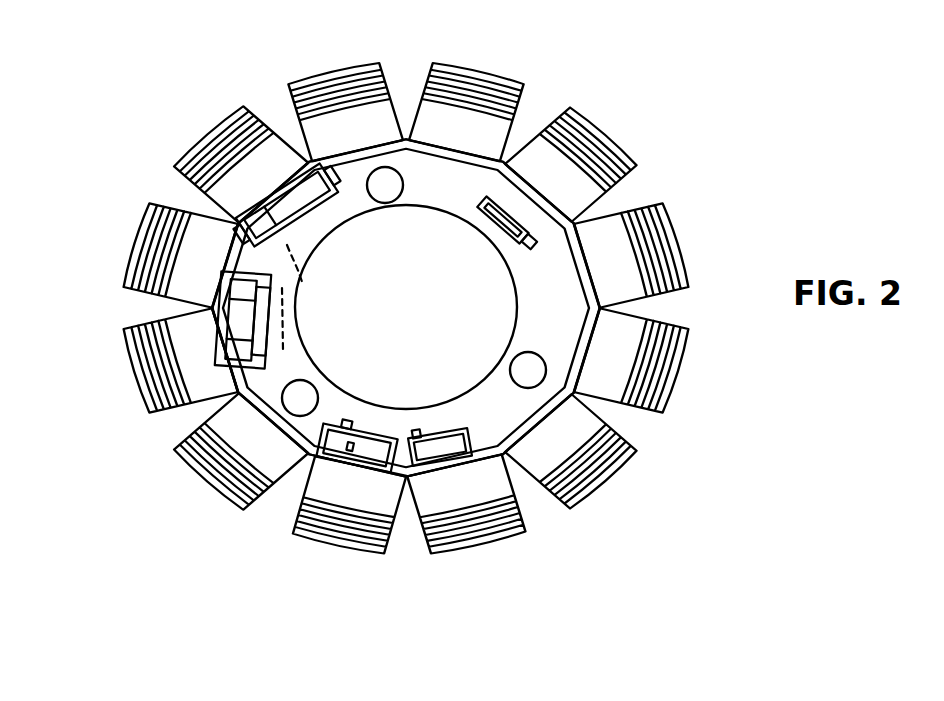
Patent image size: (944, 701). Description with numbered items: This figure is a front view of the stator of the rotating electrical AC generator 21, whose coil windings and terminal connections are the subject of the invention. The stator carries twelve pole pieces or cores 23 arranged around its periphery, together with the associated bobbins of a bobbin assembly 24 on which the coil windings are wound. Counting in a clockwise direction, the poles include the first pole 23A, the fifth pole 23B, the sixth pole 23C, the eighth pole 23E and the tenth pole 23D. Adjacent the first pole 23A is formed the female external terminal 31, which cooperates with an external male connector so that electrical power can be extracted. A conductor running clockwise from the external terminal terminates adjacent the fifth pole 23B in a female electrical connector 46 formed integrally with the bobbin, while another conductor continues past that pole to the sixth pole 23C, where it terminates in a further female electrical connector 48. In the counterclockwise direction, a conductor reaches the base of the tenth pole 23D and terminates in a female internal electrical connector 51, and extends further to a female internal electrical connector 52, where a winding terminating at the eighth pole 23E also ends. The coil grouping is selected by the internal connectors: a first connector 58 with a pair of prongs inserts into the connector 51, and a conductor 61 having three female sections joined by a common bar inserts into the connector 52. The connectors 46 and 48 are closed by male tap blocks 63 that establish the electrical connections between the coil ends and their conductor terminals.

The rotating electrical AC generator 21 is at (636, 111).
The pole pieces or cores 23 is at (143, 413).
The first pole piece 23A is at (568, 108).
The fifth pole piece 23B is at (477, 553).
The sixth pole piece 23C is at (320, 550).
The tenth pole piece 23D is at (205, 133).
The eighth pole piece 23E is at (130, 235).
The bobbin assembly 24 is at (518, 468).
The female external terminal 31 is at (588, 208).
The female electrical connector 46 is at (480, 425).
The female electrical connector 48 is at (378, 445).
The female internal electrical connector 51 is at (302, 210).
The female internal electrical connector 52 is at (243, 393).
The first connector 58 is at (300, 247).
The conductor 61 is at (238, 326).
The male tap blocks 63 is at (362, 440).